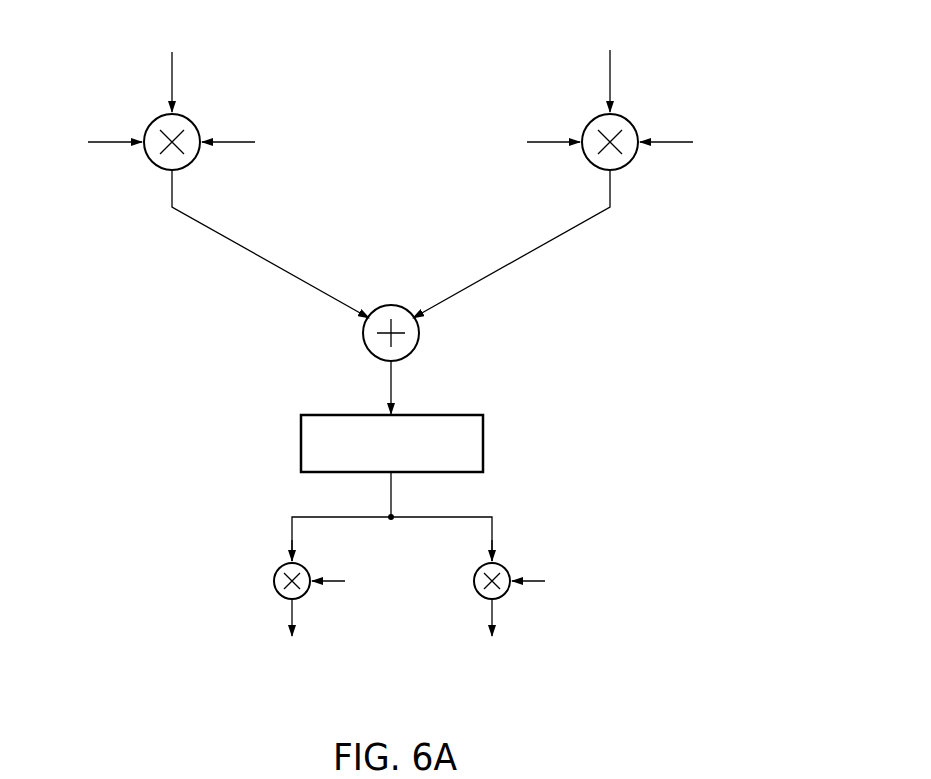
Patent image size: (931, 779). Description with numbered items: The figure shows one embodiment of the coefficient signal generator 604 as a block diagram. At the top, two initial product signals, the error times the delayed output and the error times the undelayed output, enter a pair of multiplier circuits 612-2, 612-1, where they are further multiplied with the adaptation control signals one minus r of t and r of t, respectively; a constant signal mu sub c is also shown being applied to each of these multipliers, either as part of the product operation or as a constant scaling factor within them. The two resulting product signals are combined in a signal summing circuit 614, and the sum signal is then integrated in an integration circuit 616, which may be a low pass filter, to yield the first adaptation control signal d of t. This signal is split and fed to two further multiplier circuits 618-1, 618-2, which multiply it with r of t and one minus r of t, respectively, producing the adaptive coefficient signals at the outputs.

The coefficient signal generator 604 is at (172, 448).
The multiplier circuit 612-1 is at (634, 158).
The multiplier circuit 612-2 is at (196, 158).
The signal summing circuit 614 is at (412, 341).
The integration circuit 616 is at (483, 431).
The multiplier circuit 618-1 is at (272, 588).
The multiplier circuit 618-2 is at (474, 589).